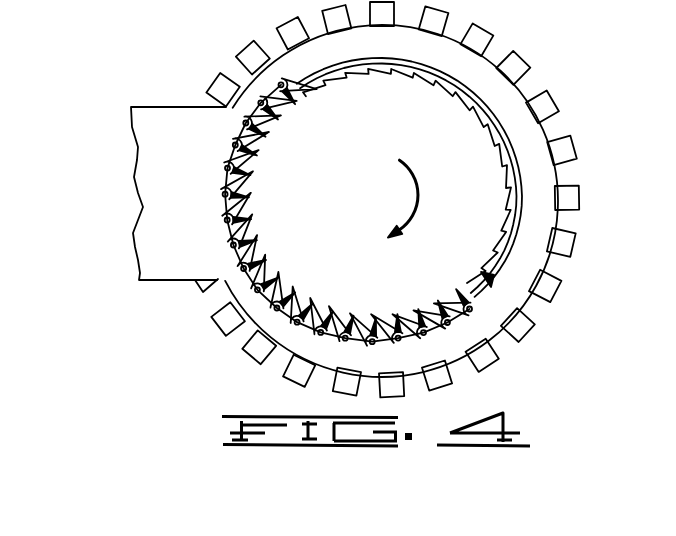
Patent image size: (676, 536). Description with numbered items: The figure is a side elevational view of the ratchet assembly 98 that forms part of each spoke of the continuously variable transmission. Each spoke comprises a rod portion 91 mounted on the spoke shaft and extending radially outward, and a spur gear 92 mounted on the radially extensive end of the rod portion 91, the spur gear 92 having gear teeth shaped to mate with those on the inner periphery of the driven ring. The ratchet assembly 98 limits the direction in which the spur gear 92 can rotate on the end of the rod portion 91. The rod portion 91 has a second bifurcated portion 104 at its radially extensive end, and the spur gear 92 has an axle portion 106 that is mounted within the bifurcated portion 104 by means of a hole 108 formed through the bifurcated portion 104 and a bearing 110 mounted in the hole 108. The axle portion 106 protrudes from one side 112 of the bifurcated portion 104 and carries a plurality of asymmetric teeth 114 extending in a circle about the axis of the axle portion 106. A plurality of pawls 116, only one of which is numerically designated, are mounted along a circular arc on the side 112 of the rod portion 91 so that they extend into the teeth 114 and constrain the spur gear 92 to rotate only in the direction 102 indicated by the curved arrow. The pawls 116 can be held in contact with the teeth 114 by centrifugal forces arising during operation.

The rod portion 91 is at (168, 117).
The spur gear 92 is at (572, 147).
The ratchet assembly 98 is at (483, 126).
The direction of rotation 102 is at (420, 193).
The second bifurcated portion 104 is at (533, 131).
The axle portion 106 is at (540, 177).
The hole 108 is at (518, 215).
The bearing 110 is at (510, 252).
The side 112 is at (472, 306).
The asymmetric teeth 114 is at (493, 282).
The pawl 116 is at (268, 122).